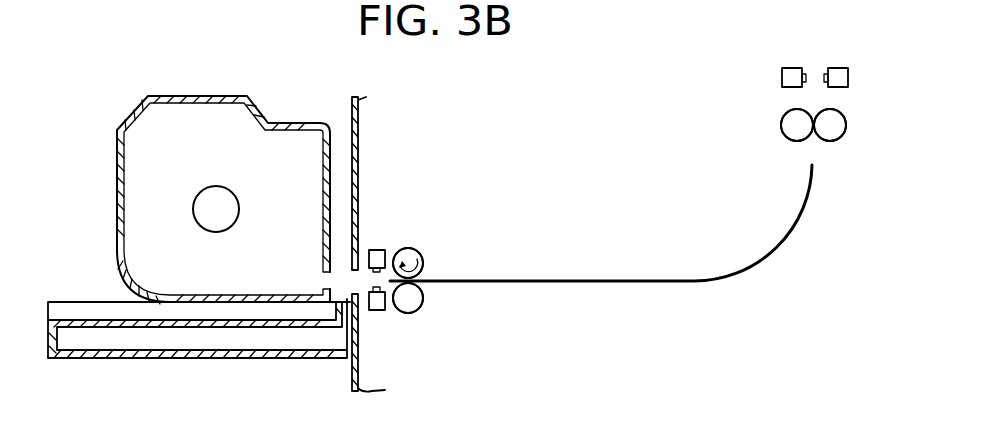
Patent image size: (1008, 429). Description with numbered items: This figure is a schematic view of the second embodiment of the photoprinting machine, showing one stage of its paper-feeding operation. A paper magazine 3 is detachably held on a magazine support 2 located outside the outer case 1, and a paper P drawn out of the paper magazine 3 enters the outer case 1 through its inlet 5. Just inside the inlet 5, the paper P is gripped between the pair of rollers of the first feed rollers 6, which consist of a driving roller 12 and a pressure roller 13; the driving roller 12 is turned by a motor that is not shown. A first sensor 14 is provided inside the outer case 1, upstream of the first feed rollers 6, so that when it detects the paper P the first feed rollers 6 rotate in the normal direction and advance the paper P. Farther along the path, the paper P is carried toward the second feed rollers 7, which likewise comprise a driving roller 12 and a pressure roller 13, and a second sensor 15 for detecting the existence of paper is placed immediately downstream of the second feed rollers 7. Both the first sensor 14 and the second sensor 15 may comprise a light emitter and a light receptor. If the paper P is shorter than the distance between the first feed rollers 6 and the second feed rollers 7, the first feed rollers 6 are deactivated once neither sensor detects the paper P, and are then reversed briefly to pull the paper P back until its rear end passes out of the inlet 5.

The outer case 1 is at (347, 108).
The magazine support 2 is at (80, 299).
The paper magazine 3 is at (186, 96).
The inlet 5 is at (382, 312).
The first feed rollers 6 is at (418, 242).
The second feed rollers 7 is at (774, 125).
The driving roller 12 is at (423, 261).
The pressure roller 13 is at (418, 302).
The first sensor 14 is at (383, 242).
The second sensor 15 is at (774, 78).
The paper P is at (650, 283).